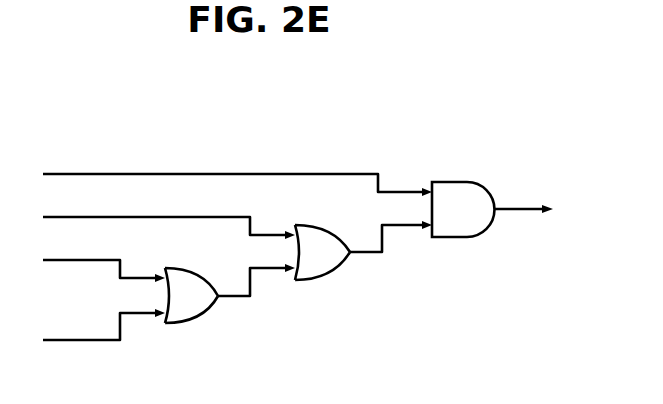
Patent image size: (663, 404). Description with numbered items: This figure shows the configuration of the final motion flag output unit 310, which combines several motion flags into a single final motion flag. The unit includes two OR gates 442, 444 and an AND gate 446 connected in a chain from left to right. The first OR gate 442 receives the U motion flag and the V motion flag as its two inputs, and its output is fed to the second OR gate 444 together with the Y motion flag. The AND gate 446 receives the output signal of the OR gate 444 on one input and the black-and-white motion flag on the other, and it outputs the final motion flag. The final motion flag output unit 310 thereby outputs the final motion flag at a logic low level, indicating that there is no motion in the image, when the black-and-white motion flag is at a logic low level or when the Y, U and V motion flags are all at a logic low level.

The final motion flag output unit 310 is at (372, 103).
The OR gate 442 is at (178, 323).
The OR gate 444 is at (306, 280).
The AND gate 446 is at (453, 237).